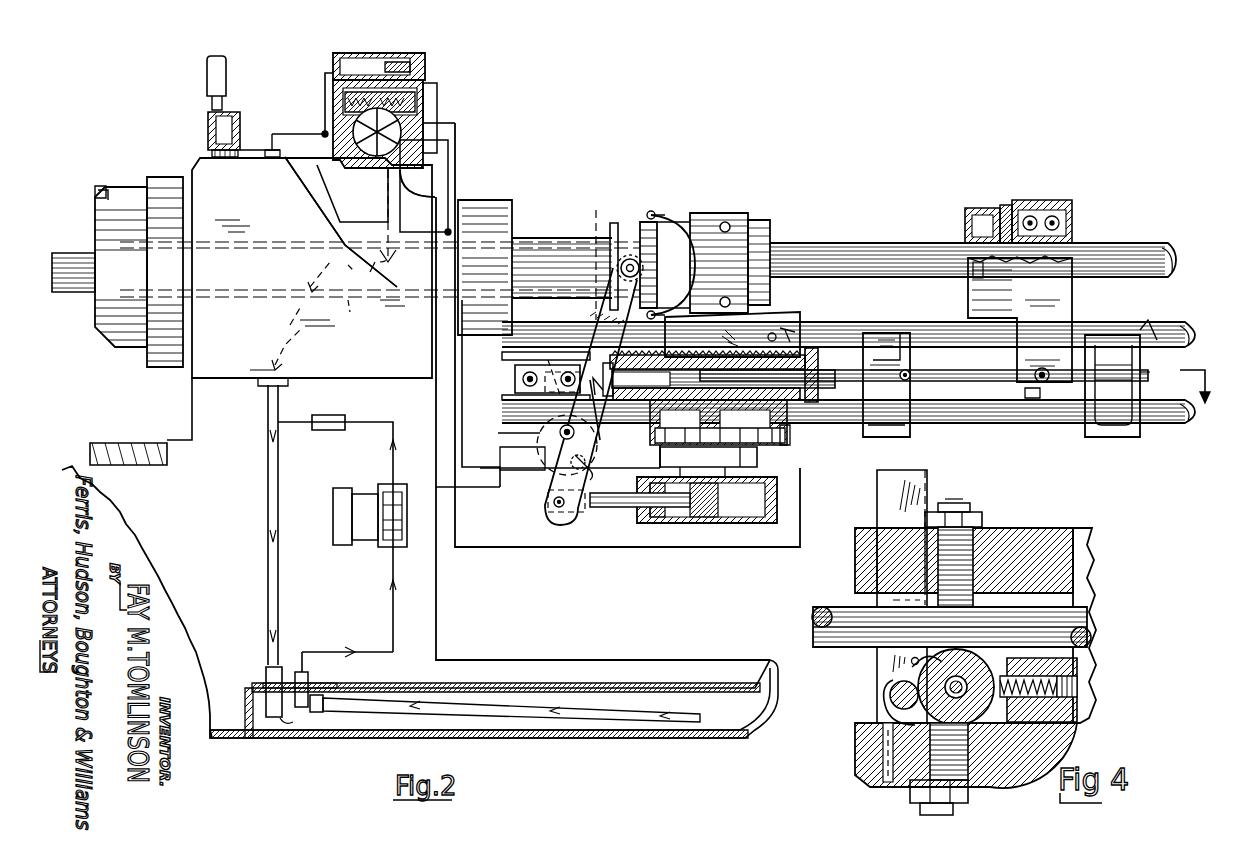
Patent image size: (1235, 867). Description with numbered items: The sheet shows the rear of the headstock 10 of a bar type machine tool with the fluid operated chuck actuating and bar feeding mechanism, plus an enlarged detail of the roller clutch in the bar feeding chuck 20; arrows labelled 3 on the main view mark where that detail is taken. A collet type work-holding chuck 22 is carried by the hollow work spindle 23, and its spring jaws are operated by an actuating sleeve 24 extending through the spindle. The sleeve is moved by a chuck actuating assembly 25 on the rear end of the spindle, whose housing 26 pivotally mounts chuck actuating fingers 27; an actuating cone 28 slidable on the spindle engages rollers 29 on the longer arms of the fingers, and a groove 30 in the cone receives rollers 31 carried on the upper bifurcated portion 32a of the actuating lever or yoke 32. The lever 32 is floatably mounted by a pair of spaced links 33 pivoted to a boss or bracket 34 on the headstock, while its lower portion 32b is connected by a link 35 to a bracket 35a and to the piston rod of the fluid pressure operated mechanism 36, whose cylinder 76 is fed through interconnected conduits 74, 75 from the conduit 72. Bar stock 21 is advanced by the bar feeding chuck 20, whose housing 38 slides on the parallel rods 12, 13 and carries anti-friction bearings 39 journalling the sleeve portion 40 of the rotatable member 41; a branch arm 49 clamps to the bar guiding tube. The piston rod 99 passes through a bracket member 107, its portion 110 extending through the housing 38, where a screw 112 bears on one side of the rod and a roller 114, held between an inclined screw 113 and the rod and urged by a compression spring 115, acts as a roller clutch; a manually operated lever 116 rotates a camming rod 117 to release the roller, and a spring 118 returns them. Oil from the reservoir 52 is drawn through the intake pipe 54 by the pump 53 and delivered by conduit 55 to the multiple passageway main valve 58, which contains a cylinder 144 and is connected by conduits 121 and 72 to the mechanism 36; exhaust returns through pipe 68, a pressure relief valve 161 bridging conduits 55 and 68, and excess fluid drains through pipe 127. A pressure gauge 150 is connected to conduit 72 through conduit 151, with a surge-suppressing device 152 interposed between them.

In FIG. 2, the headstock 10 is at (205, 405).
In FIG. 2, the work-holding chuck 22 is at (98, 222).
In FIG. 2, the pressure indicating means 150 is at (222, 100).
In FIG. 2, the surge-preventing device 152 is at (258, 112).
In FIG. 2, the pipe or conduit 127 is at (312, 120).
In FIG. 2, the cylinder 144 is at (352, 66).
In FIG. 2, the multiple passageway main valve 58 is at (408, 97).
In FIG. 2, the pipe or conduit 121 is at (458, 172).
In FIG. 2, the pipe or conduit 72 is at (455, 180).
In FIG. 2, the pipe or conduit 151 is at (318, 208).
In FIG. 2, the pipe or conduit 55 is at (392, 305).
In FIG. 2, the hollow work spindle 23 is at (528, 238).
In FIG. 2, the actuating sleeve 24 is at (598, 225).
In FIG. 2, the groove 30 is at (615, 223).
In FIG. 2, the rollers 31 is at (616, 268).
In FIG. 2, the actuating cone 28 is at (672, 222).
In FIG. 2, the rollers 29 is at (650, 211).
In FIG. 2, the chuck actuating fingers 27 is at (705, 210).
In FIG. 2, the housing 26 is at (716, 222).
In FIG. 2, the chuck actuating assembly 25 is at (712, 192).
In FIG. 2, the bar stock 21 is at (898, 243).
In FIG. 2, the bar feeding chuck 20 is at (1053, 197).
In FIG. 2, the rotatable member 41 is at (996, 208).
In FIG. 2, the anti-friction bearings 39 is at (1056, 207).
In FIG. 2, the reduced diameter sleeve portion 40 is at (1074, 238).
In FIG. 2, the housing member 38 is at (1078, 305).
In FIG. 4, the housing member 38 is at (1025, 528).
In FIG. 2, the branch arm 49 is at (1150, 318).
In FIG. 2, the rod 13 is at (1158, 330).
In FIG. 2, the rod 12 is at (1180, 420).
In FIG. 2, the piston rod portion 110 is at (948, 376).
In FIG. 4, the piston rod portion 110 is at (863, 648).
In FIG. 2, the piston rod 99 is at (842, 370).
In FIG. 2, the bracket member 107 is at (908, 372).
In FIG. 2, the section line 3 is at (1200, 400).
In FIG. 2, the fluid pressure operated mechanism 36 is at (790, 455).
In FIG. 2, the pipe or conduit 75 is at (772, 452).
In FIG. 2, the pipe or conduit 74 is at (732, 458).
In FIG. 2, the cylinder 76 is at (755, 523).
In FIG. 2, the actuating lever or yoke 32 is at (550, 440).
In FIG. 2, the upper bifurcated portion 32a is at (590, 322).
In FIG. 2, the lower portion or arm 32b is at (548, 490).
In FIG. 2, the links 33 is at (563, 360).
In FIG. 2, the boss or bracket 34 is at (515, 378).
In FIG. 2, the link 35 is at (592, 470).
In FIG. 2, the boss or bracket 35a is at (500, 462).
In FIG. 2, the return or exhaust pipe 68 is at (268, 512).
In FIG. 2, the pressure relief valve 161 is at (318, 420).
In FIG. 2, the pump 53 is at (368, 490).
In FIG. 2, the sump or reservoir 52 is at (712, 695).
In FIG. 2, the intake pipe 54 is at (636, 710).
In FIG. 4, the manually operated lever 116 is at (884, 494).
In FIG. 4, the screw 112 is at (945, 502).
In FIG. 4, the roller 114 is at (970, 708).
In FIG. 4, the compression spring 115 is at (1000, 678).
In FIG. 4, the camming rod 117 is at (885, 703).
In FIG. 4, the spring 118 is at (872, 725).
In FIG. 4, the screw 113 is at (920, 808).